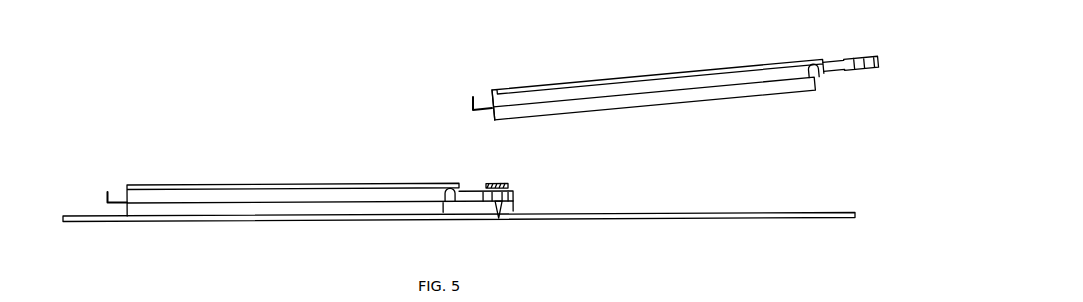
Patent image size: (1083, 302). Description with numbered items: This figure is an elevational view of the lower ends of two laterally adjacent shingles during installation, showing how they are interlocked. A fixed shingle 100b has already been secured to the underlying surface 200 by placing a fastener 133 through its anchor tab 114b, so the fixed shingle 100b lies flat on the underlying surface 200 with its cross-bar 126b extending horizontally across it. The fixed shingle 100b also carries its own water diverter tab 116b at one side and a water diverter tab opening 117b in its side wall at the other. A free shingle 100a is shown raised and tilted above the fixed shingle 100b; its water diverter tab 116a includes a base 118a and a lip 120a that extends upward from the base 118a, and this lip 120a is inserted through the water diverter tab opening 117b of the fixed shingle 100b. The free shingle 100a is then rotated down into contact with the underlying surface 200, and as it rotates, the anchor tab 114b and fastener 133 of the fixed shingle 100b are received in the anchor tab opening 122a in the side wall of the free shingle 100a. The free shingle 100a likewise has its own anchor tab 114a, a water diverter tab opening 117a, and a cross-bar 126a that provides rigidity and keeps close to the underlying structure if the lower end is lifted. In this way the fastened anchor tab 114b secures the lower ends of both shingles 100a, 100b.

The free shingle 100a is at (637, 40).
The fixed shingle 100b is at (306, 130).
The anchor tab 114a is at (837, 72).
The anchor tab 114b is at (514, 201).
The water diverter tab 116a is at (438, 104).
The water diverter tab 116b is at (104, 198).
The water diverter tab opening 117a is at (823, 62).
The water diverter tab opening 117b is at (460, 188).
The base 118a is at (482, 88).
The lip 120a is at (470, 97).
The anchor tab opening 122a is at (496, 89).
The cross-bar 126a is at (686, 91).
The cross-bar 126b is at (248, 208).
The fastener 133 is at (508, 187).
The underlying surface 200 is at (760, 217).